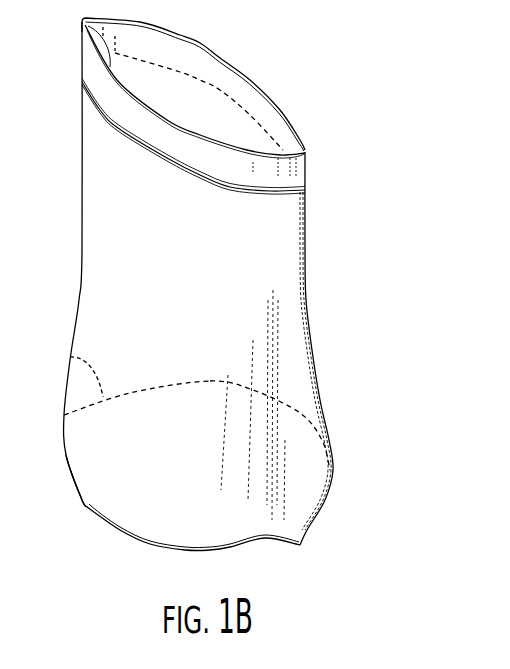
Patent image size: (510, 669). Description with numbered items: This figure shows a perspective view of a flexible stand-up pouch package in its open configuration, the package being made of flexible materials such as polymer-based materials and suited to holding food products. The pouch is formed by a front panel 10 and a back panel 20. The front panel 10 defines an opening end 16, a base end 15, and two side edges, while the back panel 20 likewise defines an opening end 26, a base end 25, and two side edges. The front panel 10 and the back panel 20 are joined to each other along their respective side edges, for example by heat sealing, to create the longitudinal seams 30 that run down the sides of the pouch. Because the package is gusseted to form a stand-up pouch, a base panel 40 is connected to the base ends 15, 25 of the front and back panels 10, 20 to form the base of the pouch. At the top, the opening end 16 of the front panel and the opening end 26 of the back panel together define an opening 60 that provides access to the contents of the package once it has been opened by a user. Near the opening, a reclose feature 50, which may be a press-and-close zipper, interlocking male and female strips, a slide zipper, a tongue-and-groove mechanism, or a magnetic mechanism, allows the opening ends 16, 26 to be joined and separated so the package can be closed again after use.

The front panel 10 is at (105, 262).
The base end 15 is at (87, 503).
The opening end 16 is at (82, 23).
The back panel 20 is at (323, 408).
The base end 25 is at (70, 357).
The opening end 26 is at (165, 30).
The longitudinal seams 30 is at (82, 178).
The base panel 40 is at (157, 513).
The reclose feature 50 is at (308, 144).
The opening 60 is at (210, 94).